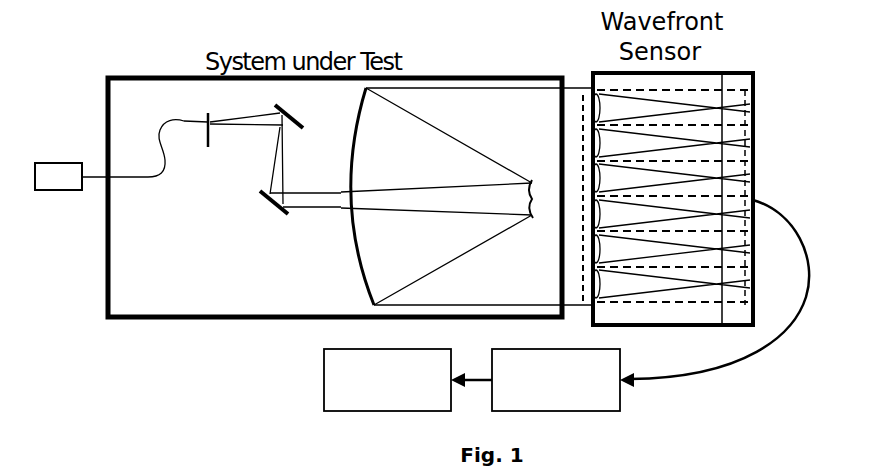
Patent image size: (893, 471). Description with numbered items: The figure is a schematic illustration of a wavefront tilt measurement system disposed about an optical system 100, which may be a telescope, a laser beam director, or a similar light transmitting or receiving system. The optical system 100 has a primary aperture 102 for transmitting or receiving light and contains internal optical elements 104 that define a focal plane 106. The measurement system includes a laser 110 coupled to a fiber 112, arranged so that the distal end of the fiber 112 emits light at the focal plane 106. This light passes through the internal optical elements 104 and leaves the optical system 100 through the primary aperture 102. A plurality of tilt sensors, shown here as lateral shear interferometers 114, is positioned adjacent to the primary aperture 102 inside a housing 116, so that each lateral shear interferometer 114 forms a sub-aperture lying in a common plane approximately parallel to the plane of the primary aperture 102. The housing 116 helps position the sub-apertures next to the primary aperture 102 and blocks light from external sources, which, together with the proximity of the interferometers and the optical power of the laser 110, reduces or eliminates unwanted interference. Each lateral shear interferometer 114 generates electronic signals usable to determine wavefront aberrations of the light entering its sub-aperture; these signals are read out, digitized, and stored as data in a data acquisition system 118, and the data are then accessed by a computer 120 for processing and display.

The optical system 100 is at (420, 75).
The primary aperture 102 is at (568, 93).
The internal optical elements 104 is at (291, 112).
The focal plane 106 is at (211, 134).
The laser 110 is at (62, 161).
The fiber 112 is at (171, 126).
The lateral shear interferometers 114 is at (760, 277).
The housing 116 is at (706, 70).
The data acquisition system 118 is at (650, 305).
The computer 120 is at (408, 370).